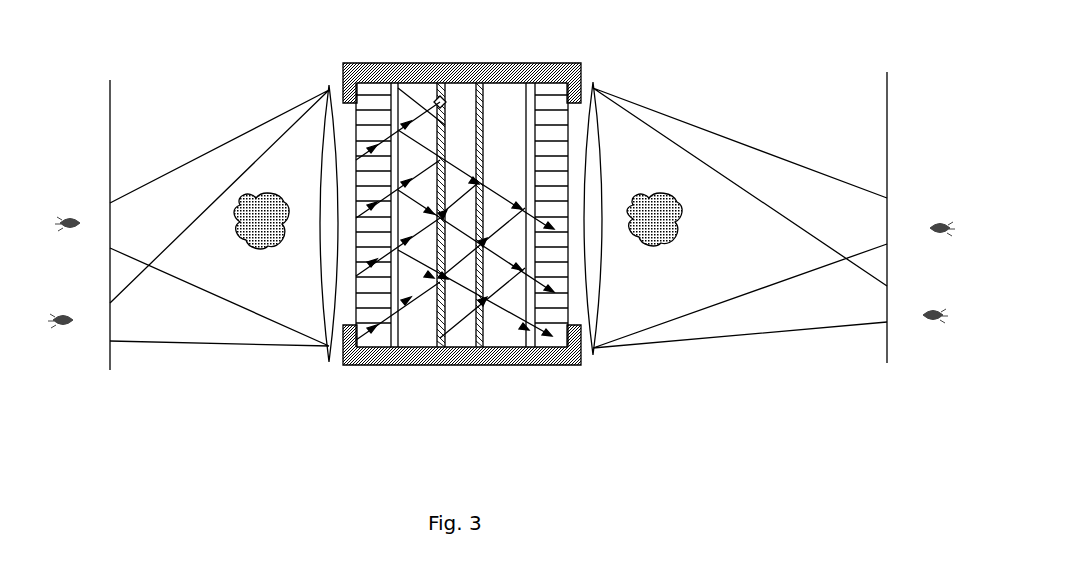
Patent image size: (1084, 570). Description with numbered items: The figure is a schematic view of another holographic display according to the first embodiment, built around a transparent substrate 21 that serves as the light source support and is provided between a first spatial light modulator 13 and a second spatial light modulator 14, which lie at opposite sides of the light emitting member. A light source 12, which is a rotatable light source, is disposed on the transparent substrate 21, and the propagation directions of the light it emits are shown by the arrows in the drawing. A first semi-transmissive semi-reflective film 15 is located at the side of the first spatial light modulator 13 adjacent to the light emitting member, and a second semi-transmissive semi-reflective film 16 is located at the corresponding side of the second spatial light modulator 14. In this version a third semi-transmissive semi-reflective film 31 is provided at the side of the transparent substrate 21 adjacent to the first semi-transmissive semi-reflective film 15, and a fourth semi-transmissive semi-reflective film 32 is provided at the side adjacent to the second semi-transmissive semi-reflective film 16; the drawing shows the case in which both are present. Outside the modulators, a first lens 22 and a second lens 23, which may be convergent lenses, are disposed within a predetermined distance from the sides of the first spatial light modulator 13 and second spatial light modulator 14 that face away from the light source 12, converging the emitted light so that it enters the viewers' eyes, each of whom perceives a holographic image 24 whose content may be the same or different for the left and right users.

The light source 12 is at (440, 96).
The first spatial light modulator 13 is at (372, 342).
The second spatial light modulator 14 is at (552, 95).
The first semi-transmissive semi-reflective film 15 is at (423, 347).
The second semi-transmissive semi-reflective film 16 is at (565, 347).
The transparent substrate 21 is at (462, 347).
The first lens 22 is at (323, 148).
The second lens 23 is at (603, 105).
The holographic image 24 is at (662, 193).
The third semi-transmissive semi-reflective film 31 is at (398, 100).
The fourth semi-transmissive semi-reflective film 32 is at (483, 130).